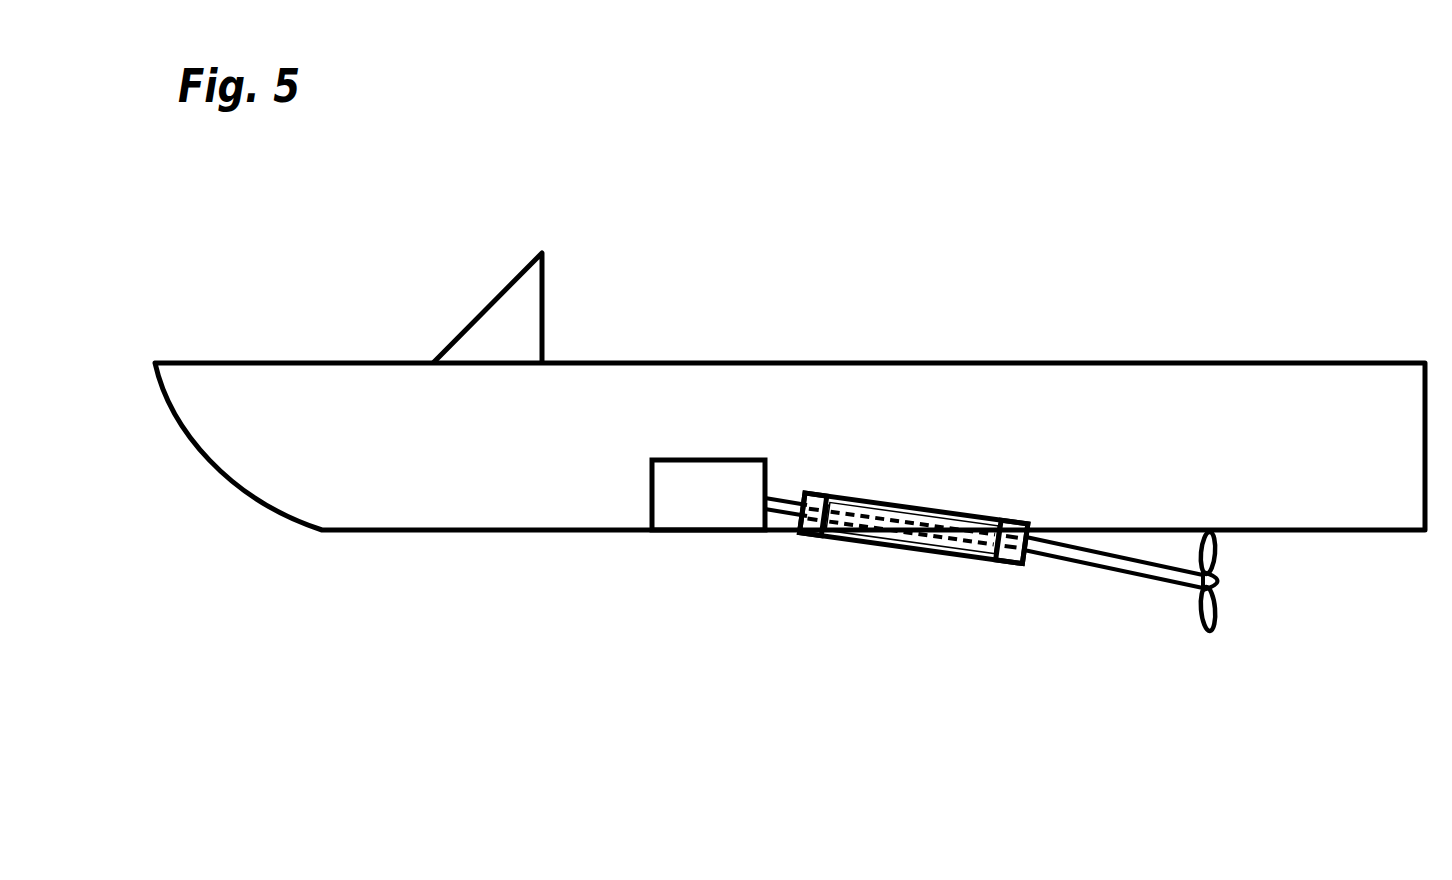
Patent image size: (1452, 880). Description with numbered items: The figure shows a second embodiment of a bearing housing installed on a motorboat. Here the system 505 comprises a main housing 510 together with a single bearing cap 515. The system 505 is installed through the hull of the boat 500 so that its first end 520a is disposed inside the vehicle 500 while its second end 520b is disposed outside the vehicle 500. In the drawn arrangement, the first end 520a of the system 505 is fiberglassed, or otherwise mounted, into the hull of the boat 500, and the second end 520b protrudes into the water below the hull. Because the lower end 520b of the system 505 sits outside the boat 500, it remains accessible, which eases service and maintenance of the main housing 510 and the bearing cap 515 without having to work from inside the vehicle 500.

The boat 500 is at (385, 362).
The system 505 is at (539, 200).
The main housing 510 is at (893, 550).
The bearing cap 515 is at (1028, 565).
The first end 520a is at (808, 568).
The second end 520b is at (973, 490).